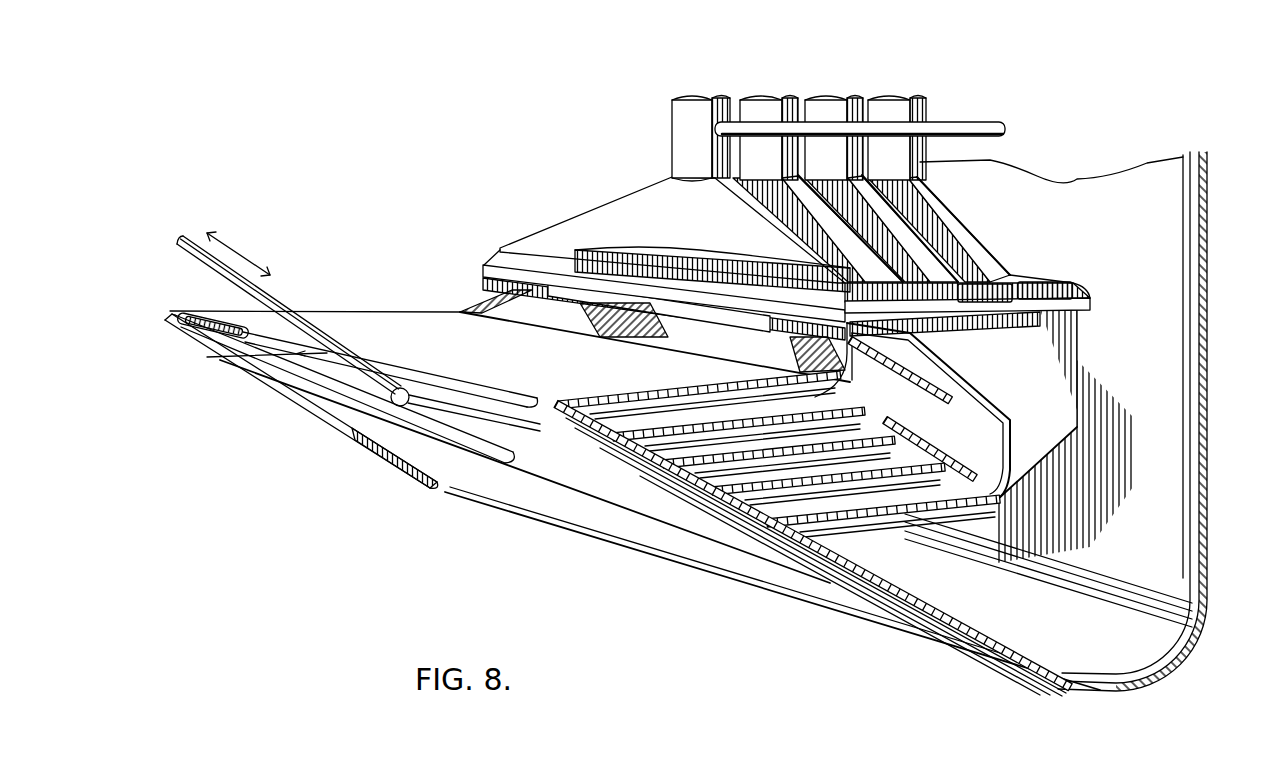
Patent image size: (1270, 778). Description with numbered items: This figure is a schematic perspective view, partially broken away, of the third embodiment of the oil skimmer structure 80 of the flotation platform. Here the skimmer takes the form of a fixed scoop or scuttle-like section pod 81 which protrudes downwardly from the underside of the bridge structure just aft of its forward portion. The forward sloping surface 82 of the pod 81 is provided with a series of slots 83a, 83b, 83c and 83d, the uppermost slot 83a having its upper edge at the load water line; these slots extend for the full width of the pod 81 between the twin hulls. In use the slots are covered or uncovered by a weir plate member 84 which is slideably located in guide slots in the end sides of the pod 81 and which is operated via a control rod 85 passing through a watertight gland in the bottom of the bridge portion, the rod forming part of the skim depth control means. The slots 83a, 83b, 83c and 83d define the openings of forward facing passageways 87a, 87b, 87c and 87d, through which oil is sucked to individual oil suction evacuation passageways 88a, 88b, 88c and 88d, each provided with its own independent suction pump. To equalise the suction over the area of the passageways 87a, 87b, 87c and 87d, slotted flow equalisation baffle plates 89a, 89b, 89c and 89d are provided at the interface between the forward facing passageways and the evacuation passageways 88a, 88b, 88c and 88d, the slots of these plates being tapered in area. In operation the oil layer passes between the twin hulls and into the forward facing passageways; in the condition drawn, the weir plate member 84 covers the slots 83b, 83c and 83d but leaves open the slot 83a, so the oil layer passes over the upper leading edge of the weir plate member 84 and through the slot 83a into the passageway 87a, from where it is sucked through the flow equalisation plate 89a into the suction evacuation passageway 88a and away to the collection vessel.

The oil skimmer structure 80 is at (851, 636).
The pod 81 is at (1180, 658).
The forward sloping surface 82 is at (922, 636).
The slot 83a is at (600, 423).
The slot 83b is at (655, 455).
The slot 83c is at (708, 487).
The slot 83d is at (763, 513).
The weir plate member 84 is at (535, 470).
The control rod 85 is at (275, 300).
The forward facing passageway 87a is at (720, 417).
The forward facing passageway 87b is at (650, 402).
The forward facing passageway 87c is at (870, 507).
The forward facing passageway 87d is at (963, 542).
The oil suction evacuation passageway 88a is at (690, 103).
The oil suction evacuation passageway 88b is at (763, 112).
The oil suction evacuation passageway 88c is at (830, 108).
The oil suction evacuation passageway 88d is at (888, 112).
The slotted flow equalisation baffle plate 89a is at (697, 283).
The slotted flow equalisation baffle plate 89b is at (963, 283).
The slotted flow equalisation baffle plate 89c is at (1015, 297).
The slotted flow equalisation baffle plate 89d is at (1077, 297).